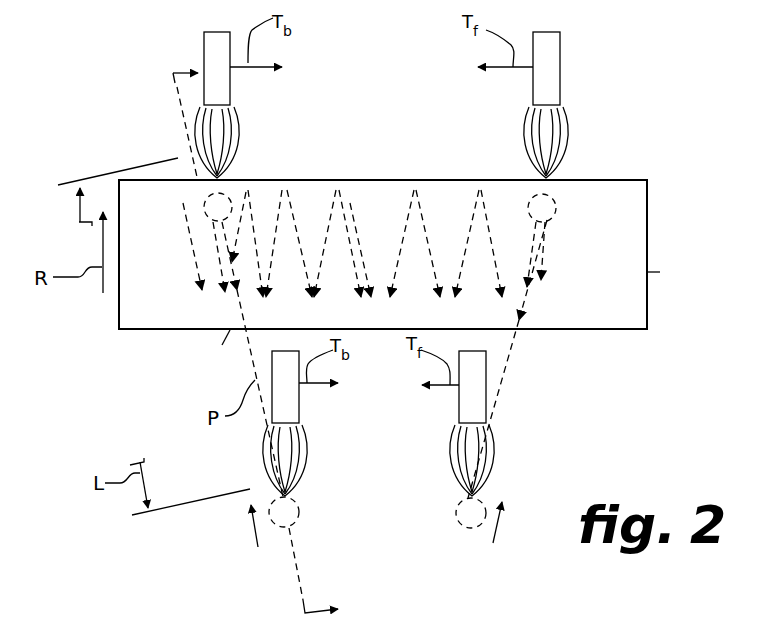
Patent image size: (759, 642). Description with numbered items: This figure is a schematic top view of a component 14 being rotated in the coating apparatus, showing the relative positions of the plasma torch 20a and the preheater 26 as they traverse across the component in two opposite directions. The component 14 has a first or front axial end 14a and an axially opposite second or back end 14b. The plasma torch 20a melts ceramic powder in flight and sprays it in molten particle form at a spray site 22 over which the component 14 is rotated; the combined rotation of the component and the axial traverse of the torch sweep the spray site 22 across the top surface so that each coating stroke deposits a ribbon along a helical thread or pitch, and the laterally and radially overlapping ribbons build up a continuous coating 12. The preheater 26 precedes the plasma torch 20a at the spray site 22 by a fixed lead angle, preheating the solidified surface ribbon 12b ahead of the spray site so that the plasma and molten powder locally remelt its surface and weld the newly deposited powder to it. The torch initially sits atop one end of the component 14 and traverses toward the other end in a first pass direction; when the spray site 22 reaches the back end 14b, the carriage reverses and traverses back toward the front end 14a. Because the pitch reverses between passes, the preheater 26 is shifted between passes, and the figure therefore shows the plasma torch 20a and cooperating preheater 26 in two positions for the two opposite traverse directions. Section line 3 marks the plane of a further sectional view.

The coating 12 is at (452, 211).
The surface ribbon 12b is at (222, 345).
The component 14 is at (313, 176).
The front axial end 14a is at (119, 317).
The back end 14b is at (660, 272).
The plasma torch 20a is at (204, 42).
The spray site 22 is at (230, 193).
The preheater 26 is at (299, 408).
The section line 3 is at (255, 343).